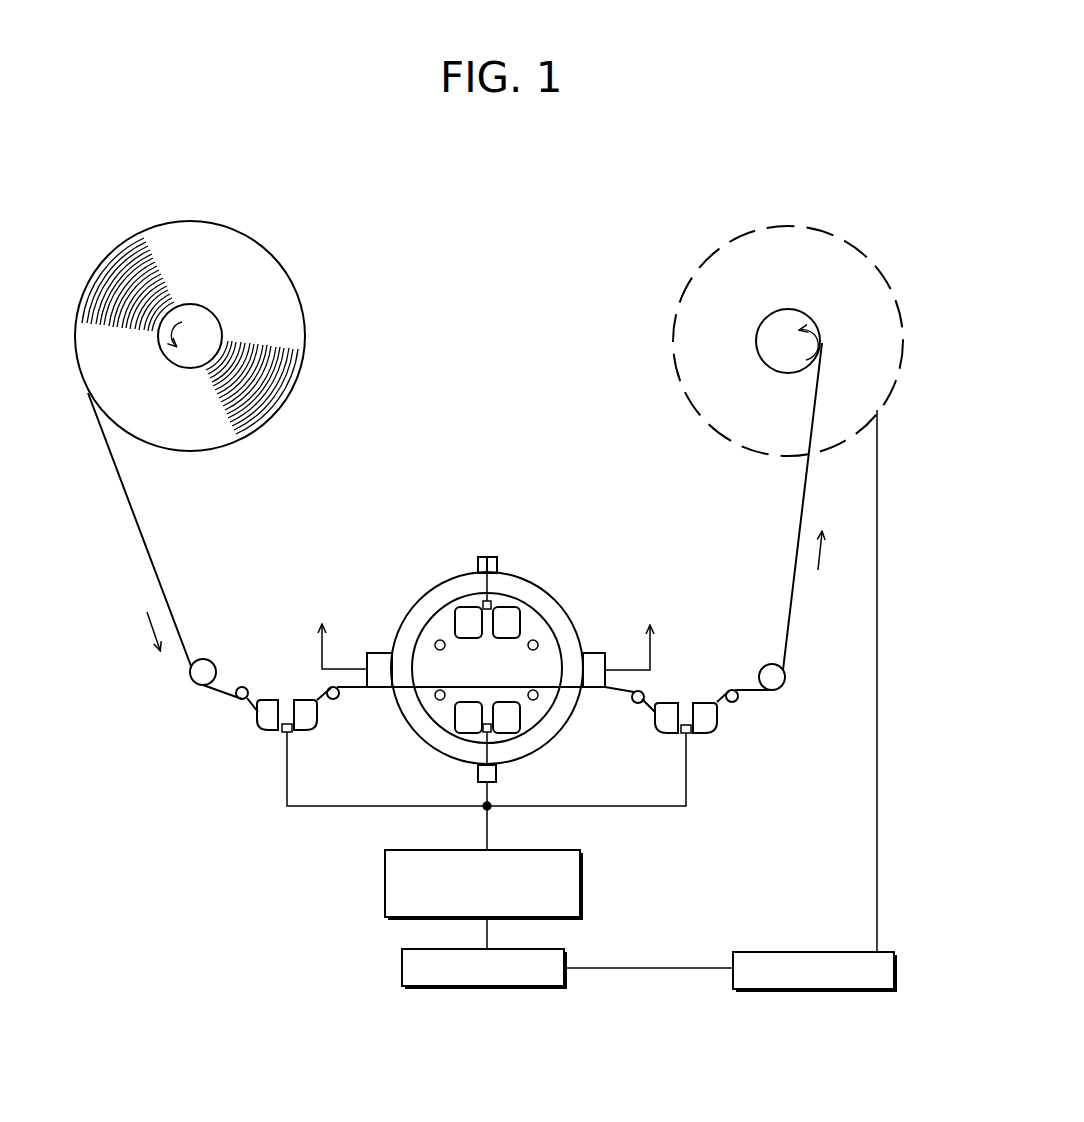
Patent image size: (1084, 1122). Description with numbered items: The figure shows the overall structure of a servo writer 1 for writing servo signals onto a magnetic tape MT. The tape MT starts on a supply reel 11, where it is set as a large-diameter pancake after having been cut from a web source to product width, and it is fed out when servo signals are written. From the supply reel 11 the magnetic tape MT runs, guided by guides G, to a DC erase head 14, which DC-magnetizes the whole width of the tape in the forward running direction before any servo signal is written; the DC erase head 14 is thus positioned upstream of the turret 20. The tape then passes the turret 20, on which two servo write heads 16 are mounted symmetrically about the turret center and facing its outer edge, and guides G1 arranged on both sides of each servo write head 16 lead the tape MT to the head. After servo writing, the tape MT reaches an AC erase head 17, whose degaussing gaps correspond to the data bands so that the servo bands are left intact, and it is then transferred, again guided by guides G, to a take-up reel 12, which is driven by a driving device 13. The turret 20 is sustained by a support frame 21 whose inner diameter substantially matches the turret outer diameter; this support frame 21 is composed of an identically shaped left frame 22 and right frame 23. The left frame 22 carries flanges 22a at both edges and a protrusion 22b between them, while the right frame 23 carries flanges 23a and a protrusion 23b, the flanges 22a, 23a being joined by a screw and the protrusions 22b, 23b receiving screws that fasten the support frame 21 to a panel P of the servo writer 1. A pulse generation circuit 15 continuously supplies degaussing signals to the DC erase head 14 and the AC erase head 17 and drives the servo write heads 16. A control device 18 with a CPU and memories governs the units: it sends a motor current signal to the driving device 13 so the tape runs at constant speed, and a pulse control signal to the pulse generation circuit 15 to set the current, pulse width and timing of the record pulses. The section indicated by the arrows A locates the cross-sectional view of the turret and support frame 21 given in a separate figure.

The servo writer 1 is at (680, 133).
The supply reel 11 is at (248, 233).
The take-up reel 12 is at (842, 242).
The driving device 13 is at (873, 990).
The DC erase head 14 is at (282, 732).
The pulse generation circuit 15 is at (583, 888).
The servo write head 16 is at (489, 603).
The AC erase head 17 is at (688, 733).
The control device 18 is at (543, 987).
The turret 20 is at (572, 564).
The support frame 21 is at (393, 597).
The left frame 22 is at (473, 588).
The flange 22a is at (481, 558).
The protrusion 22b is at (383, 690).
The right frame 23 is at (507, 587).
The flange 23a is at (495, 558).
The protrusion 23b is at (592, 668).
The guide G is at (236, 694).
The guide G1 is at (534, 690).
The magnetic tape MT is at (136, 525).
The panel P is at (489, 342).
The section line A is at (485, 647).